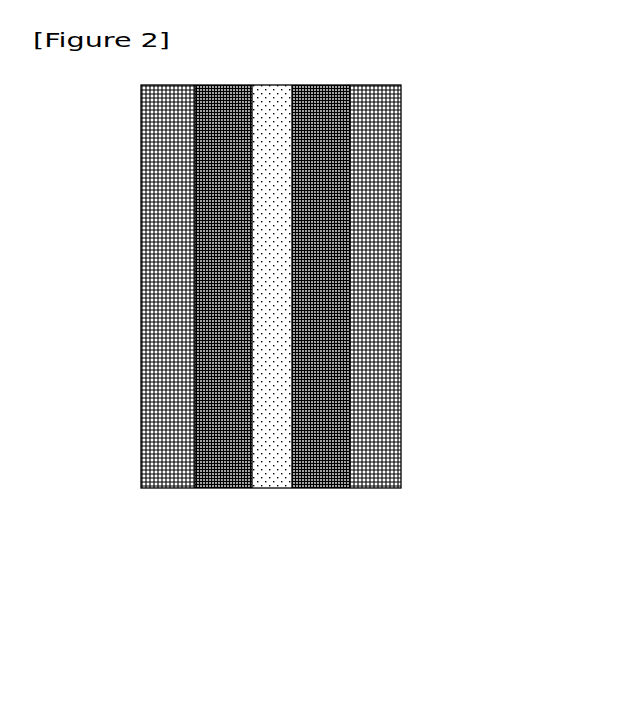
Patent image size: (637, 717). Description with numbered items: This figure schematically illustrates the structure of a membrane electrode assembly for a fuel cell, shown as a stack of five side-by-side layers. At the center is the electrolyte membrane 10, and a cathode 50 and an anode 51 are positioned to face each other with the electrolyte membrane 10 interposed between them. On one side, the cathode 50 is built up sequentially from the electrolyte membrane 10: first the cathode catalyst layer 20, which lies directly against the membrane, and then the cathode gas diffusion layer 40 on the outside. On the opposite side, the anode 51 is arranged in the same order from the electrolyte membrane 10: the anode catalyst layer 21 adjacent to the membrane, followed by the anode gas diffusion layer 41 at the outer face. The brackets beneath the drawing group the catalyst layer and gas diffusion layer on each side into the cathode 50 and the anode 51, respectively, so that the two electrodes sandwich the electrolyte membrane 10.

The electrolyte membrane 10 is at (272, 488).
The cathode catalyst layer 20 is at (217, 488).
The anode catalyst layer 21 is at (320, 488).
The cathode gas diffusion layer 40 is at (163, 488).
The anode gas diffusion layer 41 is at (373, 488).
The cathode 50 is at (185, 593).
The anode 51 is at (423, 593).